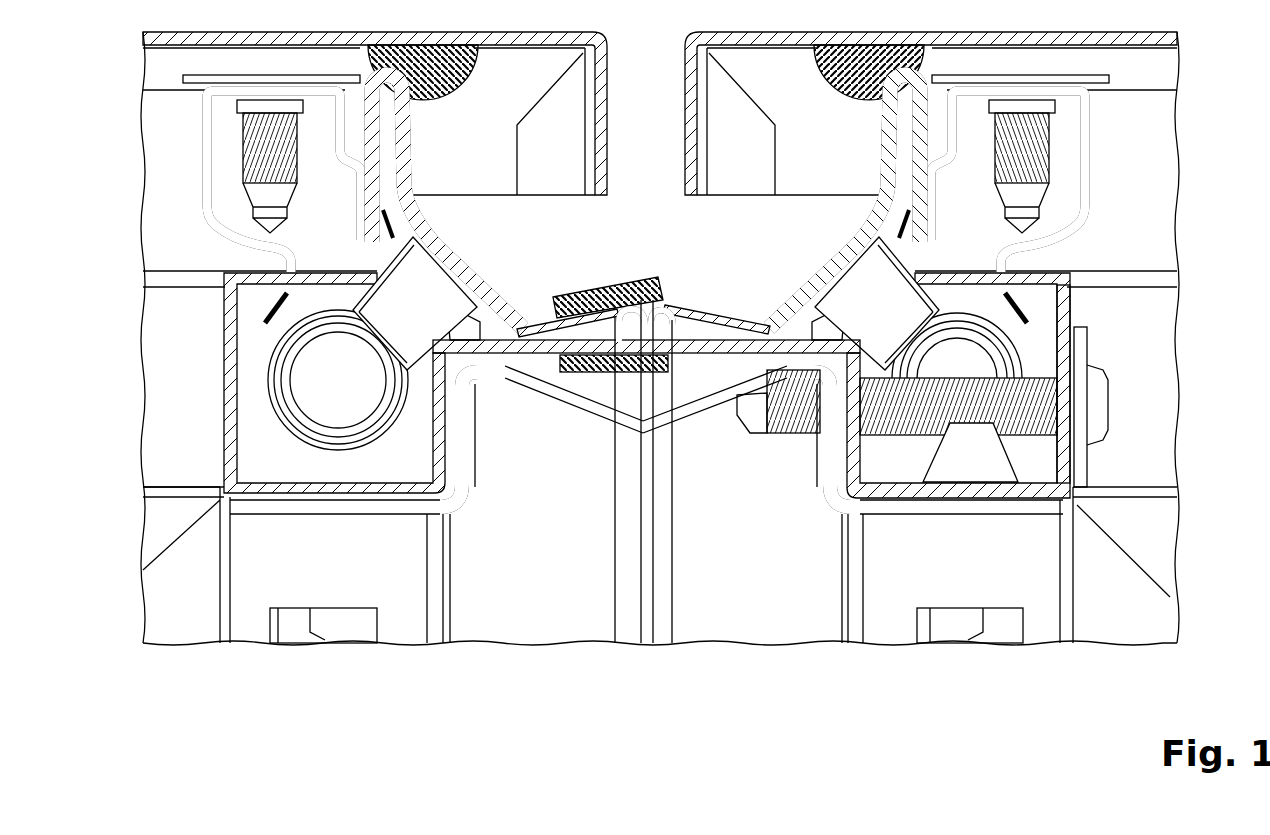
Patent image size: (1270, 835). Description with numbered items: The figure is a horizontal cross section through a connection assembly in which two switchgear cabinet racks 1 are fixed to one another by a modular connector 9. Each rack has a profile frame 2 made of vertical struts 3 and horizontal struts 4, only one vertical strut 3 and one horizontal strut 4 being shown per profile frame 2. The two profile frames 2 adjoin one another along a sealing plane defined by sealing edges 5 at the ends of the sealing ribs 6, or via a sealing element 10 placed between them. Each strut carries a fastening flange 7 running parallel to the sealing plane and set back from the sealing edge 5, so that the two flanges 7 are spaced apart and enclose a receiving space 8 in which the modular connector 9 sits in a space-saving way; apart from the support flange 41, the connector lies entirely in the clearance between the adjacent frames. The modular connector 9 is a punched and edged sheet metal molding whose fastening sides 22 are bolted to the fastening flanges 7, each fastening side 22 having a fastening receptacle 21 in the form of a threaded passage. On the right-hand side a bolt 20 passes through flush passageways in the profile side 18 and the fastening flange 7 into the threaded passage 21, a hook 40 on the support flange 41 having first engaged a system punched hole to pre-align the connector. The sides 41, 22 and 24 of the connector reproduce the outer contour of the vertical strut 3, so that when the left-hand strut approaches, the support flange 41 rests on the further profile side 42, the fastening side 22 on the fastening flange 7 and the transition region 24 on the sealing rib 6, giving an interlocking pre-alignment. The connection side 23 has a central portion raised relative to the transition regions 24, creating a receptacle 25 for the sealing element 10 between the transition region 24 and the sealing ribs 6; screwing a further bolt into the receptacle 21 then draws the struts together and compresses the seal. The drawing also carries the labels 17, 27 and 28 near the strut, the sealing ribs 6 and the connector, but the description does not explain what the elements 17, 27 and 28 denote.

The switchgear cabinet rack 1 is at (128, 349).
The profile frame 2 is at (257, 661).
The vertical strut 3 is at (222, 441).
The horizontal strut 4 is at (408, 621).
The sealing edge 5 is at (633, 300).
The sealing rib 6 is at (538, 318).
The fastening flange 7 is at (433, 450).
The receiving space 8 is at (553, 456).
The modular connector 9 is at (693, 426).
The sealing element 10 is at (596, 283).
The lever 17 is at (457, 286).
The profile side 18 is at (225, 381).
The bolt 20 is at (1092, 407).
The fastening receptacle 21 is at (470, 427).
The fastening side 22 is at (470, 473).
The connection side 23 is at (590, 433).
The transition region 24 is at (505, 372).
The receptacle 25 is at (627, 388).
The block 27 is at (747, 420).
The compression spring 28 is at (776, 405).
The hook 40 is at (967, 470).
The support flange 41 is at (303, 515).
The further profile side 42 is at (267, 501).